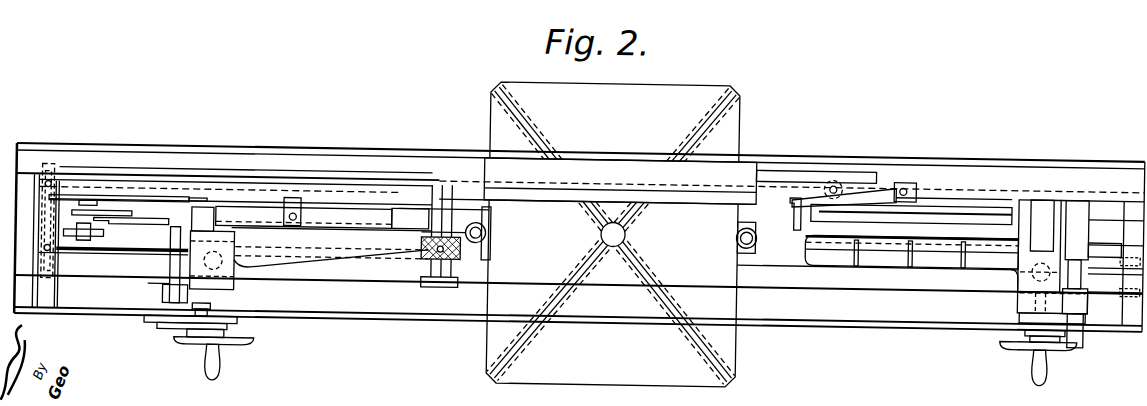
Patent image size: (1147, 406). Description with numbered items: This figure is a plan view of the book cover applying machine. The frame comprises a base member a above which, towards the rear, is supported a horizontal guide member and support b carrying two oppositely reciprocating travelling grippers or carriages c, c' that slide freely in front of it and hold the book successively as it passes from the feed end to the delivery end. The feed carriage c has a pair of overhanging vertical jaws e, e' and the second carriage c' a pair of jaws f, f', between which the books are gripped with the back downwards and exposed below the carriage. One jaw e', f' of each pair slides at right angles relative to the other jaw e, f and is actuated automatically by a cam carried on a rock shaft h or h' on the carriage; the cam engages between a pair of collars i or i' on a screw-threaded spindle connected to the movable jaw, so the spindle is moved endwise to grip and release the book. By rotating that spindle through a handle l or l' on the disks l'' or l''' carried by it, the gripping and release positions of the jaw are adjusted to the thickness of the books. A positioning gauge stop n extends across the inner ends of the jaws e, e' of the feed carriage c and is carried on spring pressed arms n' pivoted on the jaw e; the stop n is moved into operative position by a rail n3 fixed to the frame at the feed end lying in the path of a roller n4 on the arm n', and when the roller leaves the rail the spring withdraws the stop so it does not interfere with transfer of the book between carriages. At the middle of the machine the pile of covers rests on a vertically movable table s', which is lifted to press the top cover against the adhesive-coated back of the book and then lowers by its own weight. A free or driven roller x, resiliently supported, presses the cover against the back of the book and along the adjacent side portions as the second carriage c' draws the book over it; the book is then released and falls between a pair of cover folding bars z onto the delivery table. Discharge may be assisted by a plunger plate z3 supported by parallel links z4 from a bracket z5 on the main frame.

The base member a is at (88, 262).
The horizontal guide member and support b is at (365, 156).
The travelling gripper or carriage c is at (1050, 221).
The travelling gripper or carriage c' is at (219, 199).
The gripping jaw e is at (912, 170).
The gripping jaw e' is at (912, 192).
The gripping jaw f is at (411, 169).
The gripping jaw f' is at (330, 294).
The rock shaft h is at (1101, 295).
The rock shaft h' is at (158, 295).
The collars i is at (1031, 353).
The collars i' is at (190, 343).
The handle l is at (1046, 371).
The handle l' is at (227, 364).
The disk l'' is at (1005, 355).
The disk l''' is at (242, 358).
The positioning gauge stop n is at (788, 176).
The spring pressed arms n' is at (902, 166).
The rail n3 is at (843, 160).
The roller n4 is at (826, 172).
The vertically movable table s' is at (613, 234).
The free or driven roller x is at (484, 207).
The cover folding bars z is at (133, 245).
The plunger plate z3 is at (260, 209).
The parallel links z4 is at (167, 197).
The bracket z5 is at (143, 195).